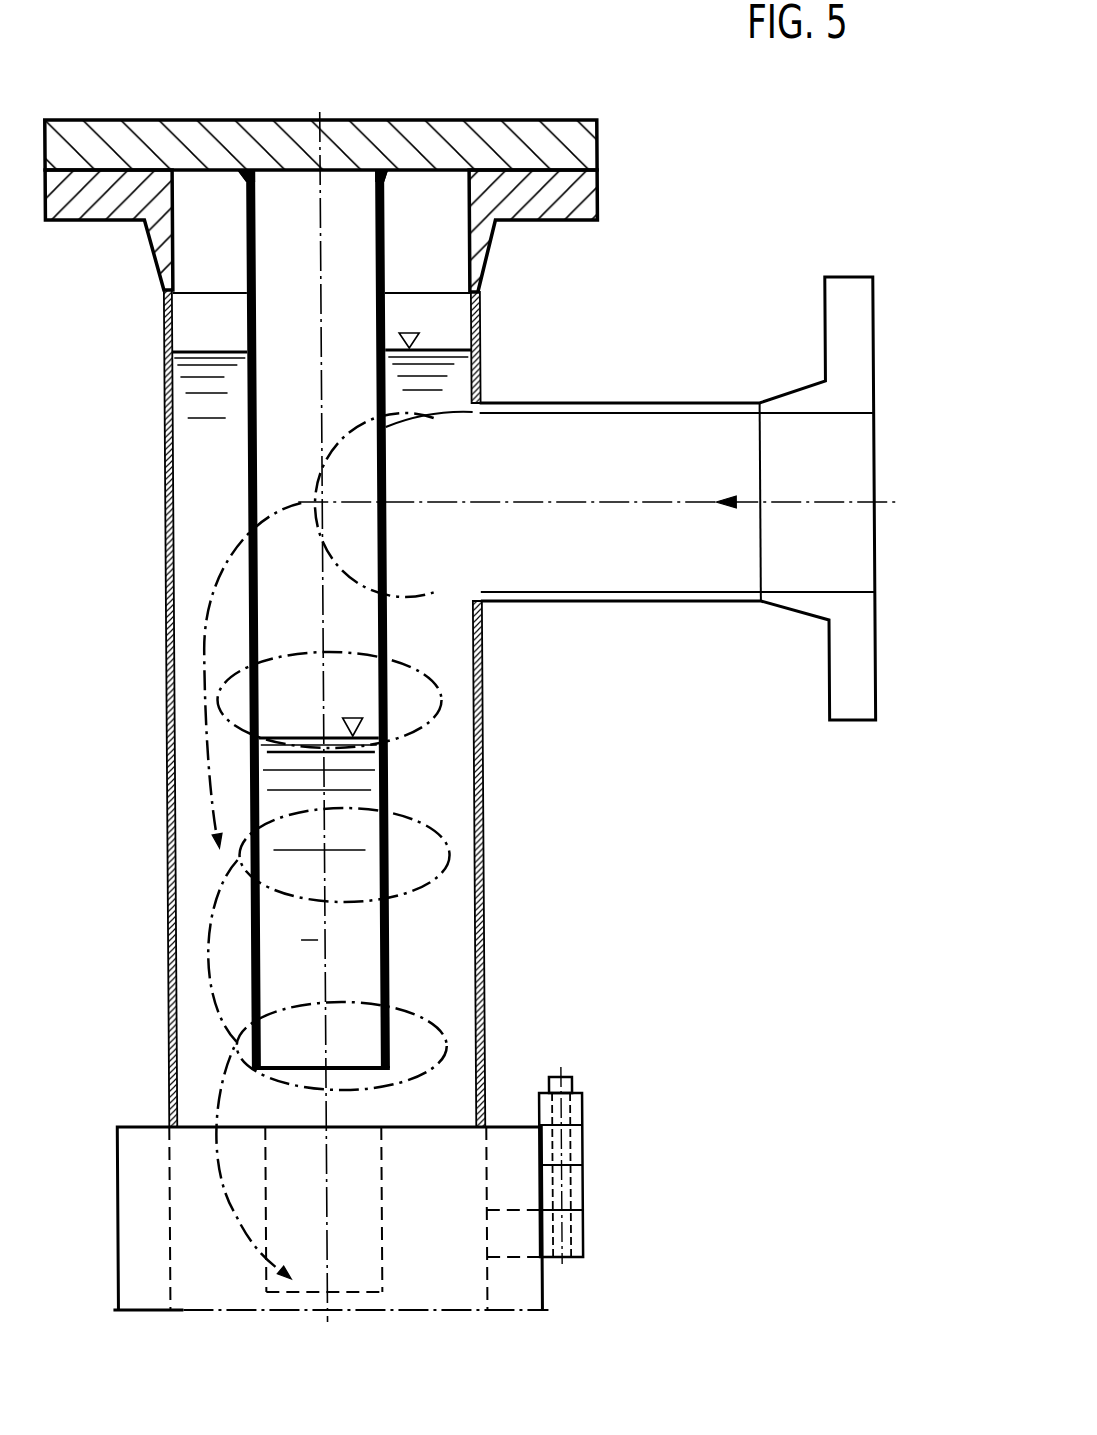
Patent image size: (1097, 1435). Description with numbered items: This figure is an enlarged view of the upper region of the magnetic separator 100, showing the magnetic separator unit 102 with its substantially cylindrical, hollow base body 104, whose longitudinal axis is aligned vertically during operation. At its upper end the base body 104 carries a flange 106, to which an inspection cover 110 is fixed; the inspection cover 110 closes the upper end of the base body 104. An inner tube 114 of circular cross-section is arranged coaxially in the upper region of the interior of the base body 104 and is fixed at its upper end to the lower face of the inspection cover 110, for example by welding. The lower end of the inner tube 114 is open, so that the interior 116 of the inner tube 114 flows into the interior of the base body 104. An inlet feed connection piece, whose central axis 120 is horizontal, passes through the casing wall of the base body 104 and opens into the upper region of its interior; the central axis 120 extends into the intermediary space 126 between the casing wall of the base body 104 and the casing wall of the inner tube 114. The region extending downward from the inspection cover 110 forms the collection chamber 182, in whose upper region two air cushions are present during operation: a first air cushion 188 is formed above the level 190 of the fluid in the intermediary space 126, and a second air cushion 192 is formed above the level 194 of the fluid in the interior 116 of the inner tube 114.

The magnetic separator 100 is at (468, 679).
The magnetic separator unit 102 is at (148, 852).
The base body 104 is at (162, 405).
The flange 106 is at (562, 190).
The inspection cover 110 is at (563, 148).
The inner tube 114 is at (383, 320).
The interior of the inner tube 116 is at (313, 387).
The central axis of the inlet feed connection piece 120 is at (696, 499).
The intermediary space 126 is at (196, 309).
The collection chamber 182 is at (152, 571).
The first air cushion 188 is at (413, 197).
The level of the fluid in the intermediary space 190 is at (199, 352).
The second air cushion 192 is at (313, 347).
The level of the fluid in the interior of the inner tube 194 is at (360, 736).